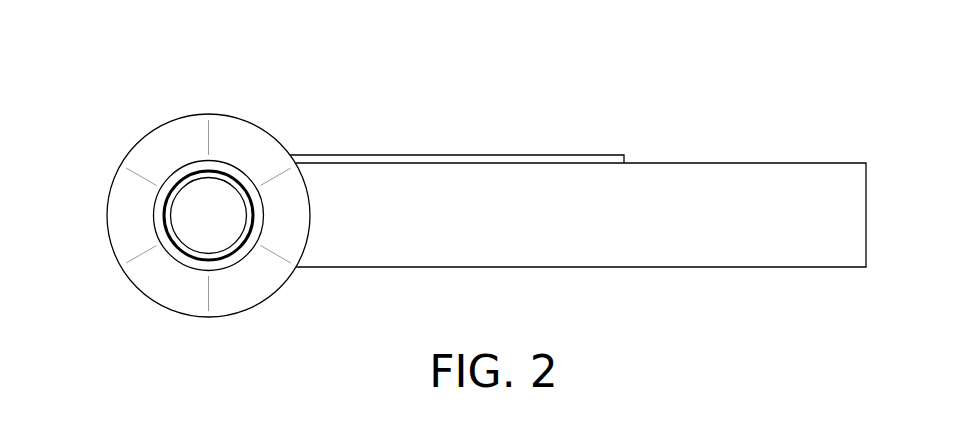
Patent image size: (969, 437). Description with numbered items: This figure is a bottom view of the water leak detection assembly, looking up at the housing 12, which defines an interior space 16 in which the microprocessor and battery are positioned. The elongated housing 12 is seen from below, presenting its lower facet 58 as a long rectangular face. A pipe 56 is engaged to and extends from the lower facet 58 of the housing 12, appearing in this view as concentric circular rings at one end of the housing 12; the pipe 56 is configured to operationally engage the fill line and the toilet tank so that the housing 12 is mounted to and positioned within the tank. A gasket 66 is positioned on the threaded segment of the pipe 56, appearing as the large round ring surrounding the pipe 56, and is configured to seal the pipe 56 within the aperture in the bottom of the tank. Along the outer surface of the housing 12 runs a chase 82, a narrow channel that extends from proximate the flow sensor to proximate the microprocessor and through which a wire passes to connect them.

The housing 12 is at (461, 161).
The interior space 16 is at (580, 156).
The pipe 56 is at (188, 170).
The lower facet 58 is at (655, 212).
The gasket 66 is at (155, 158).
The chase 82 is at (364, 160).